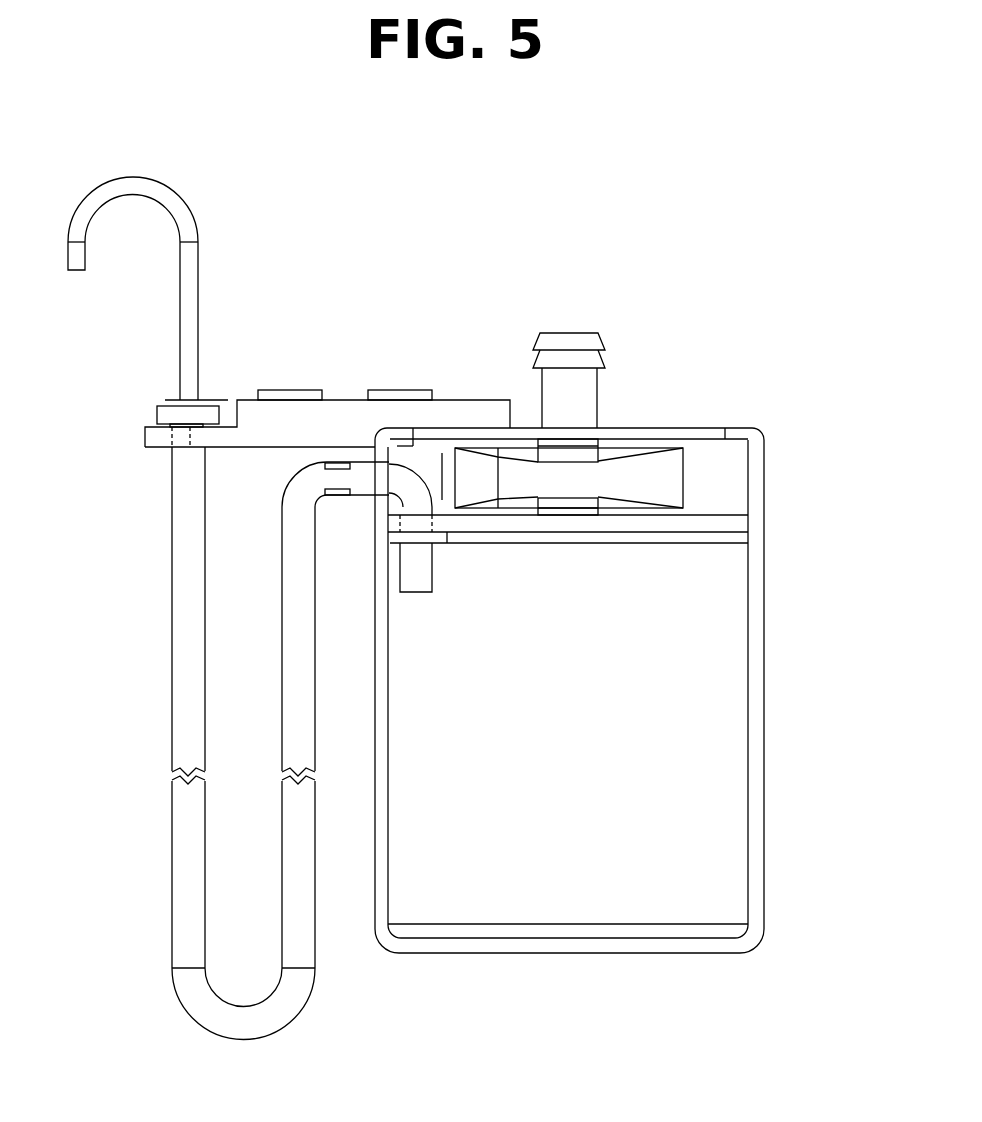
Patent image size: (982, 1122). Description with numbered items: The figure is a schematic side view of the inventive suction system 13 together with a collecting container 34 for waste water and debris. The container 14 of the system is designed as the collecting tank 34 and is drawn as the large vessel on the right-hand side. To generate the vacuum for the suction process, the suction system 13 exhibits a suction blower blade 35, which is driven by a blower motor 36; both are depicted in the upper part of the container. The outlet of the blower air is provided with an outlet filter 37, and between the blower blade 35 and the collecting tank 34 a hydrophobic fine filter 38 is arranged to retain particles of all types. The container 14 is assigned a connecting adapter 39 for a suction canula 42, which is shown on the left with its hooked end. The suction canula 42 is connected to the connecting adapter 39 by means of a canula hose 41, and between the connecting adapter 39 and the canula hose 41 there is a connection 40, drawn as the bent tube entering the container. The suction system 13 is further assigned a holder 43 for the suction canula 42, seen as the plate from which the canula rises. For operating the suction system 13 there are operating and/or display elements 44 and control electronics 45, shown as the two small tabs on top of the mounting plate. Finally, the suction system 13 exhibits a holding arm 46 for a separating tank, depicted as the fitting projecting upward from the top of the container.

The suction system 13 is at (631, 554).
The container 14 is at (764, 815).
The collecting container 34 is at (764, 907).
The suction blower blade 35 is at (667, 488).
The blower motor 36 is at (572, 478).
The outlet filter 37 is at (712, 437).
The hydrophobic fine filter 38 is at (632, 545).
The connecting adapter 39 is at (413, 572).
The connection 40 is at (338, 481).
The canula hose 41 is at (185, 672).
The suction canula 42 is at (137, 178).
The holder 43 is at (145, 434).
The operating and/or display elements 44 is at (400, 396).
The control electronics 45 is at (283, 412).
The holding arm 46 is at (566, 342).